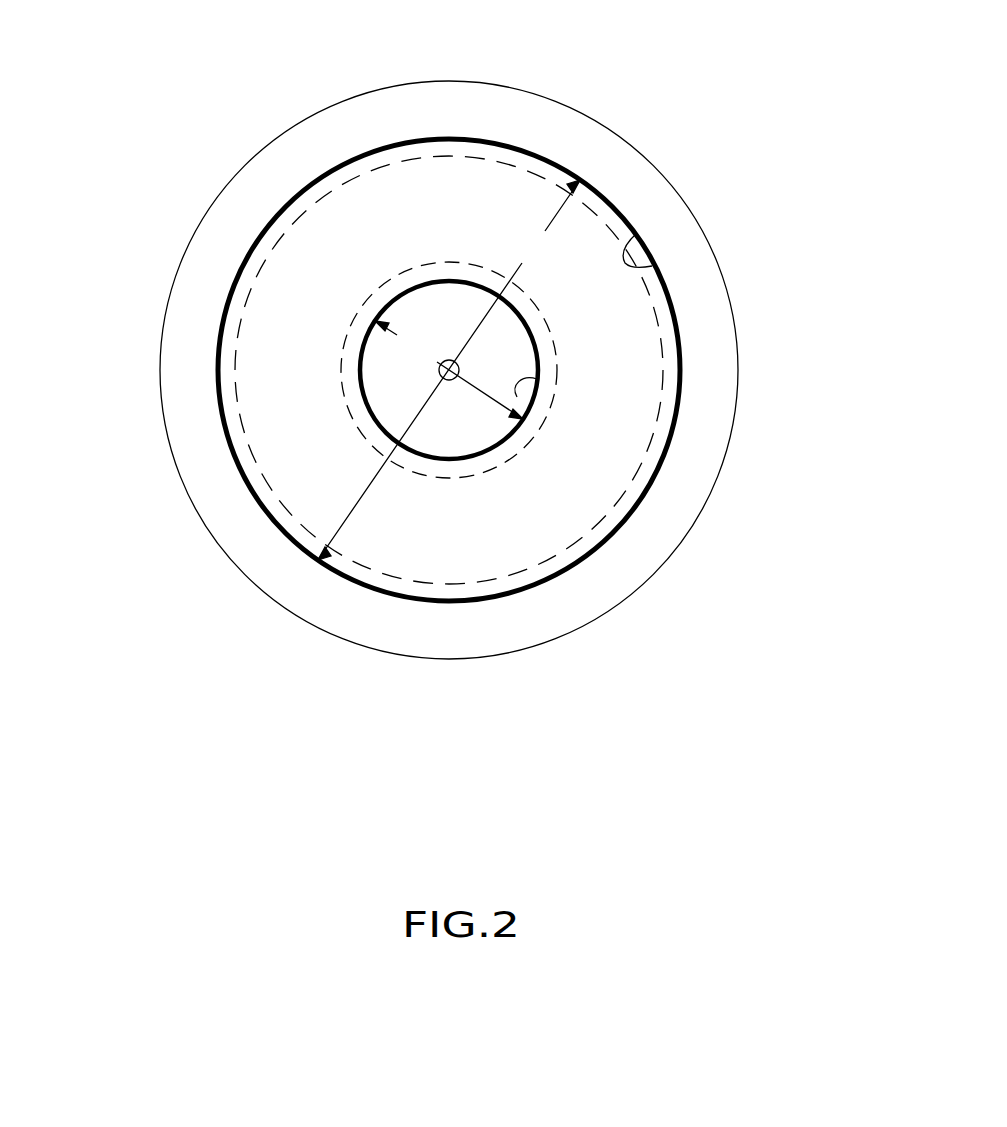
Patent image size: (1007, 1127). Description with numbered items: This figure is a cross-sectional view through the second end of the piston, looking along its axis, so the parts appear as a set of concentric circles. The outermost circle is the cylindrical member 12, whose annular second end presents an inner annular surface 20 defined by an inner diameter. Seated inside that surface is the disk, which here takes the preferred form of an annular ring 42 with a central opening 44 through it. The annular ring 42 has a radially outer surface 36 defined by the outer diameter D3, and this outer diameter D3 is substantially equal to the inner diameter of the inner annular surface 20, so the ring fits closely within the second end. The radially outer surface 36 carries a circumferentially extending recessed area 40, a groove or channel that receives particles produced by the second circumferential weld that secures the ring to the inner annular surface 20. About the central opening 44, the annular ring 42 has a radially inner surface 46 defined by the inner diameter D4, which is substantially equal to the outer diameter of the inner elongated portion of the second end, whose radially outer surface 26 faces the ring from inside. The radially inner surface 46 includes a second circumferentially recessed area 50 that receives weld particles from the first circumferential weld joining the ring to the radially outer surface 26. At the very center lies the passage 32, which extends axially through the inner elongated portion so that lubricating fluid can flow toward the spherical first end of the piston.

The cylindrical member 12 is at (603, 127).
The inner annular surface 20 is at (637, 233).
The radially outer surface 26 is at (365, 403).
The passage 32 is at (440, 372).
The radially outer surface 36 is at (476, 140).
The recessed area 40 is at (557, 553).
The annular ring 42 is at (615, 373).
The central opening 44 is at (390, 307).
The radially inner surface 46 is at (517, 397).
The second circumferentially recessed area 50 is at (437, 476).
The outer diameter D3 is at (449, 370).
The inner diameter D4 is at (449, 370).